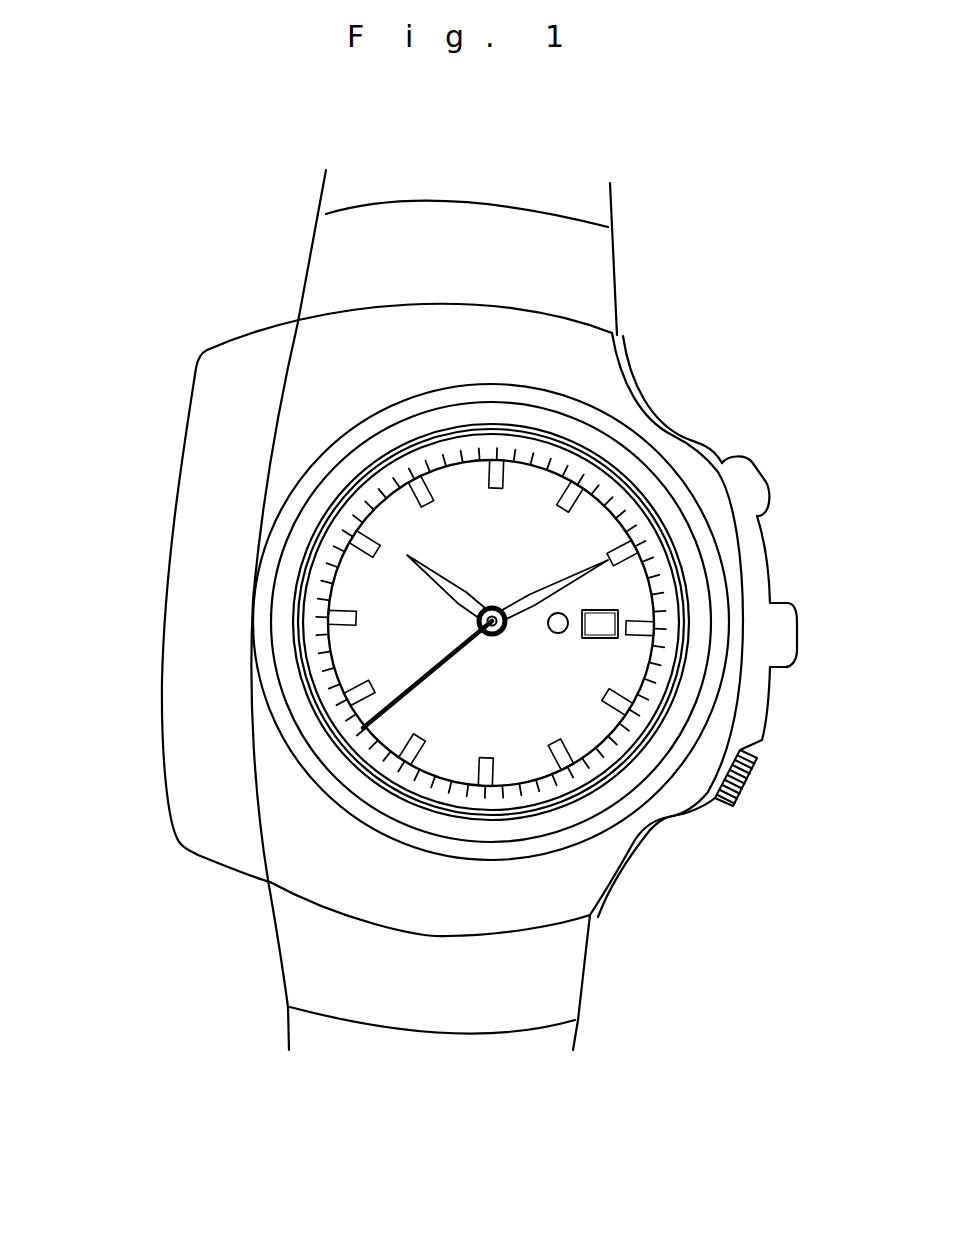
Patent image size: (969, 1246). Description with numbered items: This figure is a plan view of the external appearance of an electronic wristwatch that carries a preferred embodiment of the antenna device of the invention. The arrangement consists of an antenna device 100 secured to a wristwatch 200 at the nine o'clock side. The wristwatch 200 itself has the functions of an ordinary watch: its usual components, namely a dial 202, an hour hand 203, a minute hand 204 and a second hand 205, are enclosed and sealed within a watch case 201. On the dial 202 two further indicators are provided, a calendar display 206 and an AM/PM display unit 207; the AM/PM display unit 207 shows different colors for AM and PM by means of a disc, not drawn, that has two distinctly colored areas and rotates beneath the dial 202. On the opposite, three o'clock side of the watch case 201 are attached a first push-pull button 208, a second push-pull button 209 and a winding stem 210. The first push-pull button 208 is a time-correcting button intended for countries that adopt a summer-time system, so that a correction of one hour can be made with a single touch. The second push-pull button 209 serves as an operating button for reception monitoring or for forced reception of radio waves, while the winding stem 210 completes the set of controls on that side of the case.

The antenna device 100 is at (205, 293).
The wristwatch 200 is at (657, 338).
The watch case 201 is at (540, 328).
The dial 202 is at (537, 490).
The hour hand 203 is at (435, 573).
The minute hand 204 is at (612, 566).
The second hand 205 is at (392, 705).
The calendar display 206 is at (617, 638).
The AM/PM display unit 207 is at (560, 634).
The first push-pull button 208 is at (790, 618).
The second push-pull button 209 is at (748, 468).
The winding stem 210 is at (758, 775).